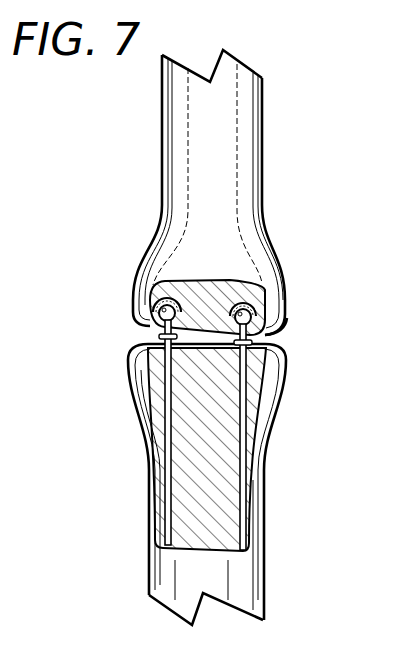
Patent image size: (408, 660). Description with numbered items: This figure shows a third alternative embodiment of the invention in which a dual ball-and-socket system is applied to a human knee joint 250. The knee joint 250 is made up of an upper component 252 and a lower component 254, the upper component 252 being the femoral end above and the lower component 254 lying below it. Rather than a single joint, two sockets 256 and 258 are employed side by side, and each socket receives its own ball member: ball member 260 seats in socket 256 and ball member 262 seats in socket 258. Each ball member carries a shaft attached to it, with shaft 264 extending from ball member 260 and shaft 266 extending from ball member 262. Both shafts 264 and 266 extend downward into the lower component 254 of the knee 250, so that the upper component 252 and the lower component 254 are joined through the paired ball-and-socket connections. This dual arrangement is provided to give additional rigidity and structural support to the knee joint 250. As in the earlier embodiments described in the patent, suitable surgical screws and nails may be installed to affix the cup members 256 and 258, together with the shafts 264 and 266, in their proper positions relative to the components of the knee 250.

The knee joint 250 is at (272, 240).
The upper component 252 is at (289, 318).
The lower component 254 is at (266, 584).
The socket 256 is at (258, 285).
The socket 258 is at (165, 298).
The ball member 260 is at (260, 335).
The ball member 262 is at (158, 336).
The shaft 264 is at (262, 448).
The shaft 266 is at (160, 468).